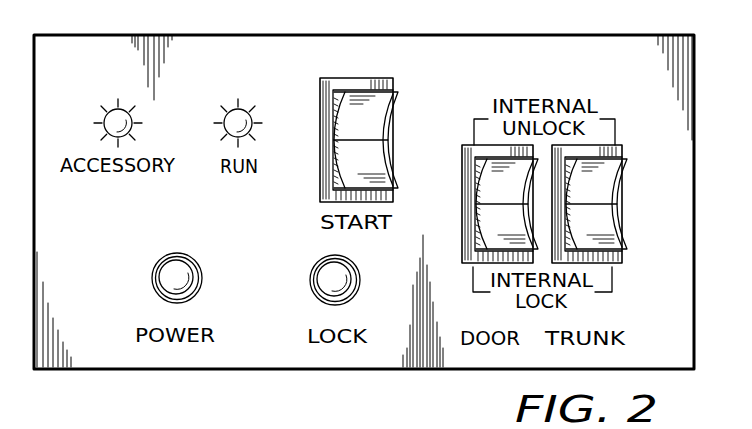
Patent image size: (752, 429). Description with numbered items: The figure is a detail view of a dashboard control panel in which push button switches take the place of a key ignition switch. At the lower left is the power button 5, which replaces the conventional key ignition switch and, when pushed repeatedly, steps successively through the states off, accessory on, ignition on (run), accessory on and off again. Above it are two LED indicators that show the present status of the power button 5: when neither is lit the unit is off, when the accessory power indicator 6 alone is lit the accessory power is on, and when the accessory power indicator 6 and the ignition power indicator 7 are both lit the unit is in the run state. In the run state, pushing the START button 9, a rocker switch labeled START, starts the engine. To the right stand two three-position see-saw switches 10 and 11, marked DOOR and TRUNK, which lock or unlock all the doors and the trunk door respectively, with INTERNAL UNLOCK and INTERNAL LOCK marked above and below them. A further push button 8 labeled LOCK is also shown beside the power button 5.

The power button 5 is at (167, 278).
The accessory power indicator 6 is at (108, 118).
The ignition power indicator 7 is at (228, 120).
The lock button 8 is at (325, 281).
The START button 9 is at (338, 78).
The three position see-saw switch 10 is at (460, 172).
The three position see-saw switch 11 is at (625, 183).